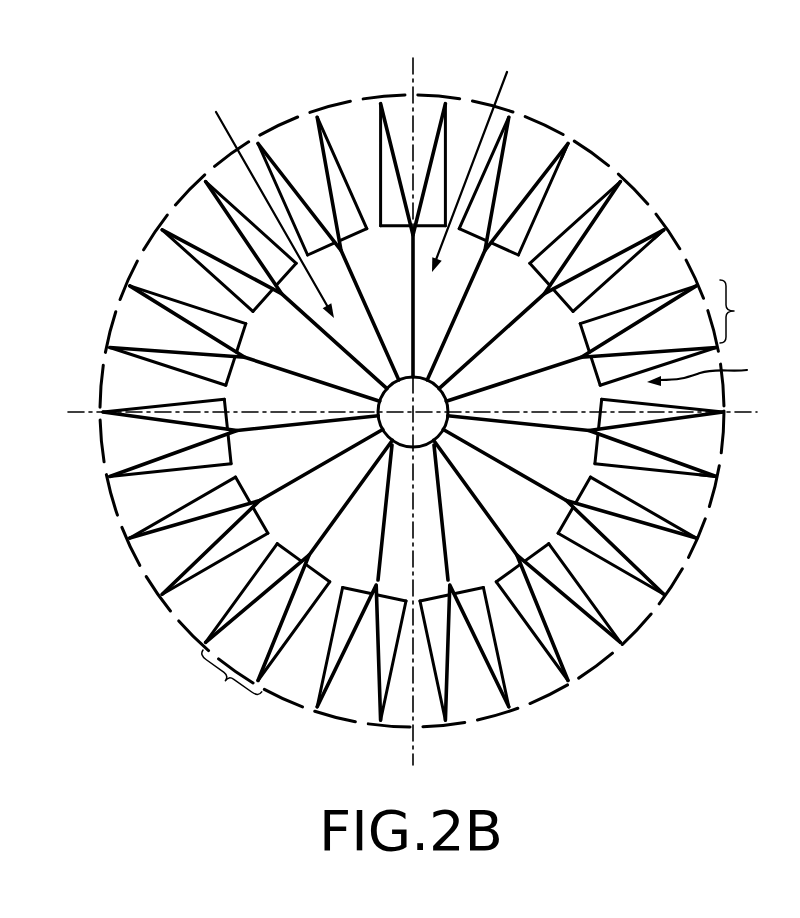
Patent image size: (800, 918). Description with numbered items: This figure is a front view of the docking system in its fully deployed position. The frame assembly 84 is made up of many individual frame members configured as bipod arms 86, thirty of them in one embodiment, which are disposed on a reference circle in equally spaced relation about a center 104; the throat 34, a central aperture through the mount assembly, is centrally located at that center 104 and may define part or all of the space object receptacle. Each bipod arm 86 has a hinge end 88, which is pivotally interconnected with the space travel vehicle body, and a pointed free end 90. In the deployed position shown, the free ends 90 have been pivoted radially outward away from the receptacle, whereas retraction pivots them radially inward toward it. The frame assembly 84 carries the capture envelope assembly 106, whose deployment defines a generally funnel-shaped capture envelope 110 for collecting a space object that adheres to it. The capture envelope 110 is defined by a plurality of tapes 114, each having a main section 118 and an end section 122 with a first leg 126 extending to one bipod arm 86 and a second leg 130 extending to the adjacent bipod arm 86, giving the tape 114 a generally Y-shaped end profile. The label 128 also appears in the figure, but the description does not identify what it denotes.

The throat 34 is at (382, 392).
The frame assembly 84 is at (713, 370).
The bipod arm 86 is at (330, 150).
The hinge end 88 is at (352, 233).
The free end 90 is at (568, 140).
The center 104 is at (427, 378).
The capture envelope assembly 106 is at (486, 159).
The capture envelope 110 is at (259, 201).
The tape 114 is at (558, 158).
The main section 118 is at (548, 274).
The end section 122 is at (478, 496).
The first leg 126 is at (285, 165).
The suction side surface 128 is at (312, 142).
The second leg 130 is at (660, 240).